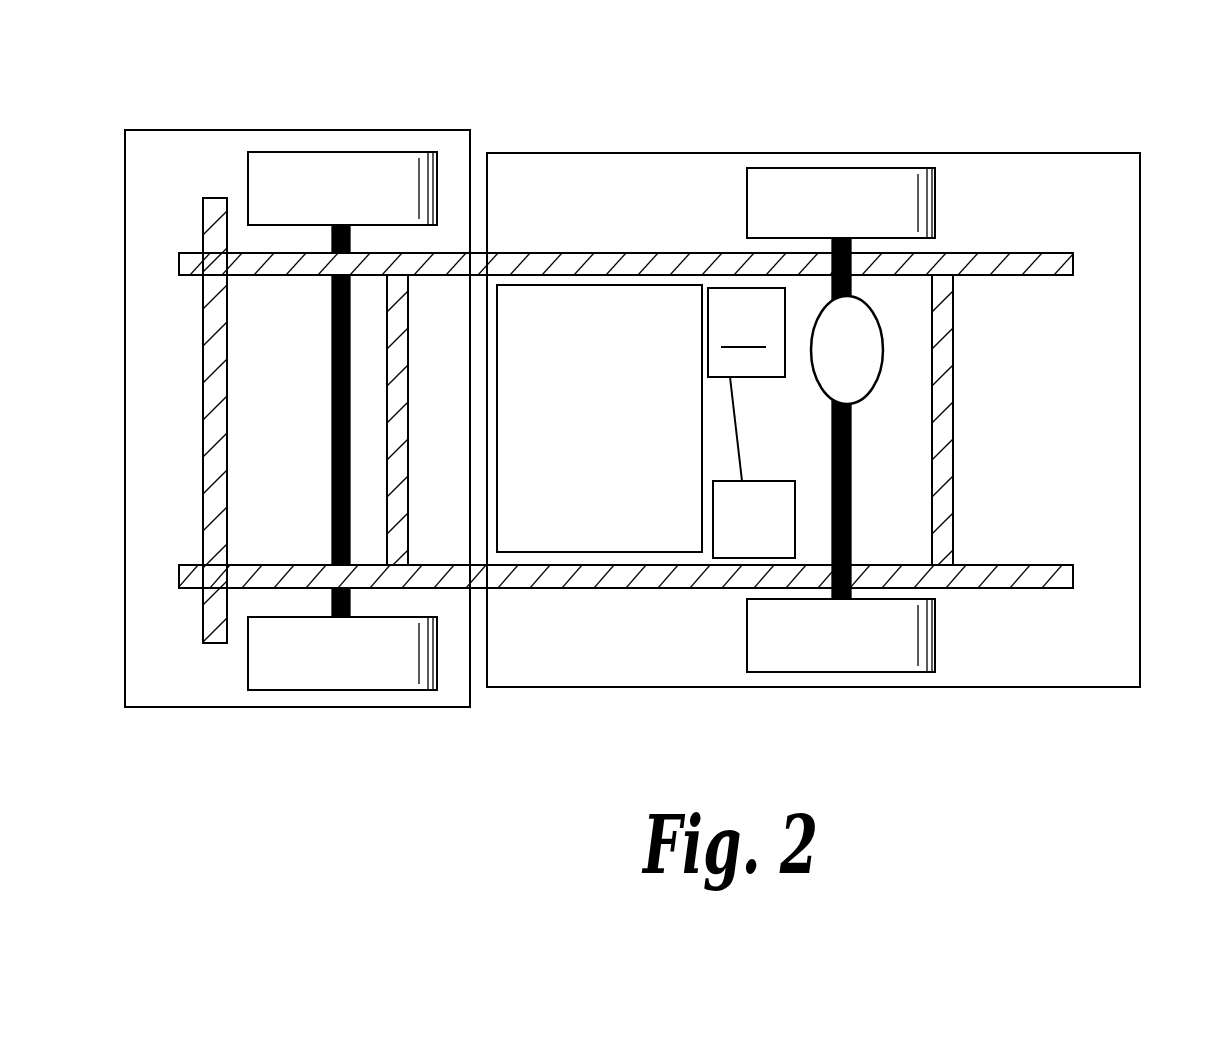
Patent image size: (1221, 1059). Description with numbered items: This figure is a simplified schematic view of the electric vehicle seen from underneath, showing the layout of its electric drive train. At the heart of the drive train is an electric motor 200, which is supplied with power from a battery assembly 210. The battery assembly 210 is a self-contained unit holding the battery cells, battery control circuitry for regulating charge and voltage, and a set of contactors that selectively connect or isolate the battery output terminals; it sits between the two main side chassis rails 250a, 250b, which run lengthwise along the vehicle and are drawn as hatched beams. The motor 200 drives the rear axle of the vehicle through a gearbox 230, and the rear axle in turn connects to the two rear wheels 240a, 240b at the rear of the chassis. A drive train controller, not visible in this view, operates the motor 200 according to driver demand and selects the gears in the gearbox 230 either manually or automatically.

The electric motor 200 is at (763, 481).
The battery assembly 210 is at (626, 415).
The gearbox 230 is at (747, 543).
The rear wheel 240a is at (805, 168).
The rear wheel 240b is at (867, 672).
The main side chassis rail 250a is at (527, 253).
The main side chassis rail 250b is at (545, 588).